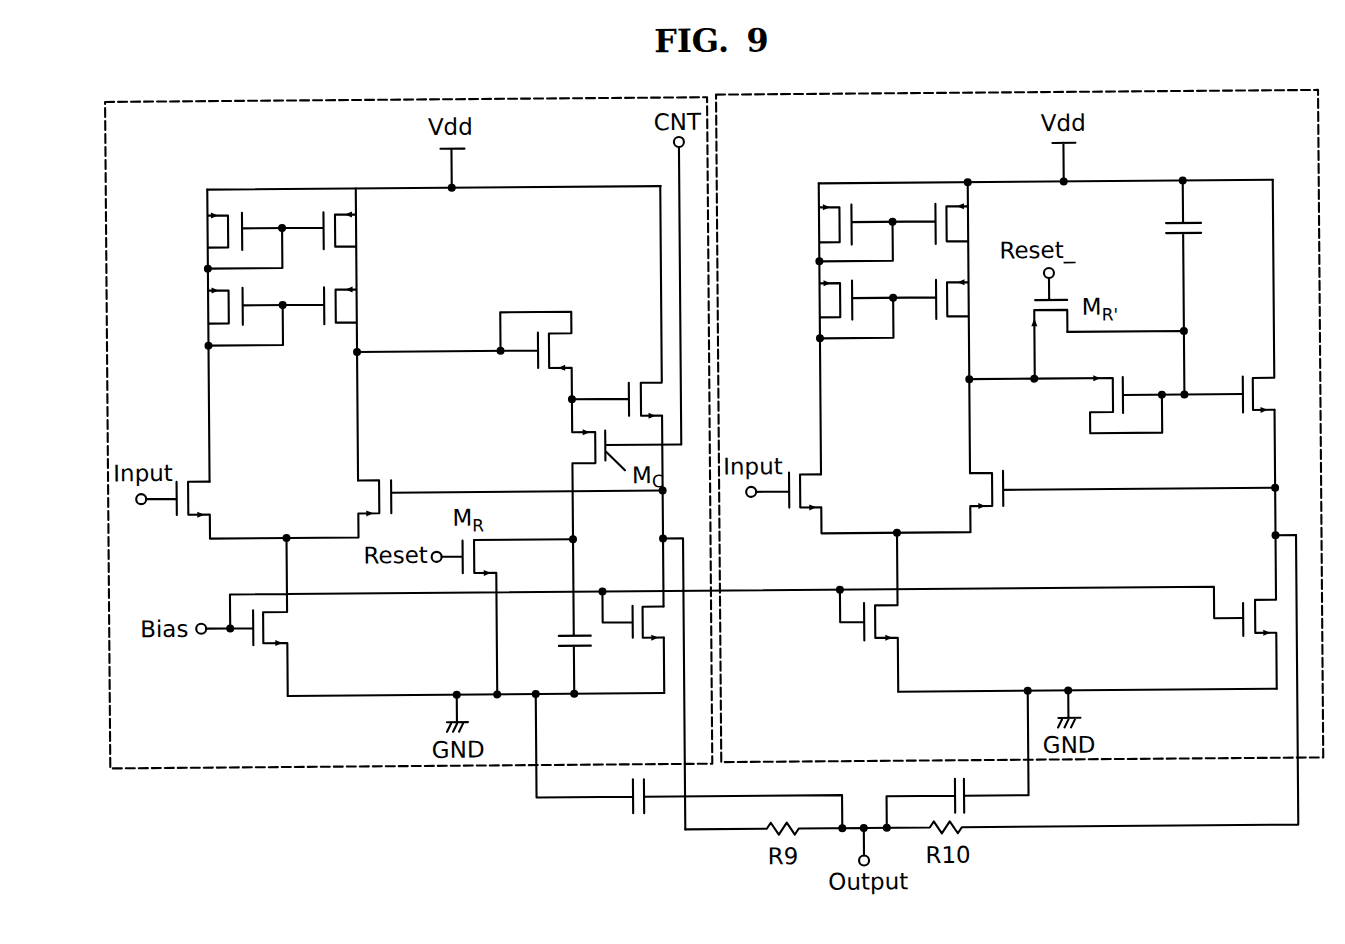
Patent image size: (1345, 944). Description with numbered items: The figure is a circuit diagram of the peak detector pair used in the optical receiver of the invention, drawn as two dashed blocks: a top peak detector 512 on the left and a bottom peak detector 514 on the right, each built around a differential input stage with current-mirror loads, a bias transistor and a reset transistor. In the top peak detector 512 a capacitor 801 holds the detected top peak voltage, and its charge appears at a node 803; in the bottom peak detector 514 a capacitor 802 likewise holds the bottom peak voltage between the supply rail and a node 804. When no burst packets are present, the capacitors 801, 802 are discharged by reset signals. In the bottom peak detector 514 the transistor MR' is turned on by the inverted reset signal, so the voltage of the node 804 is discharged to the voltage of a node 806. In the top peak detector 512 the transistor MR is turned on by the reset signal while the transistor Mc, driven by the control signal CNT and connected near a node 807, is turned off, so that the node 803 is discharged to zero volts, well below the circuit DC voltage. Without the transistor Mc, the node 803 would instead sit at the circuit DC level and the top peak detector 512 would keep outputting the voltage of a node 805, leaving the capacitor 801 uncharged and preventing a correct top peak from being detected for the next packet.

The top peak detector 512 is at (623, 98).
The bottom peak detector 514 is at (1236, 95).
The capacitor 801 is at (556, 635).
The capacitor 802 is at (1206, 233).
The node 803 is at (569, 536).
The node 804 is at (1192, 335).
The node 805 is at (448, 346).
The node 806 is at (1032, 378).
The node 807 is at (659, 536).